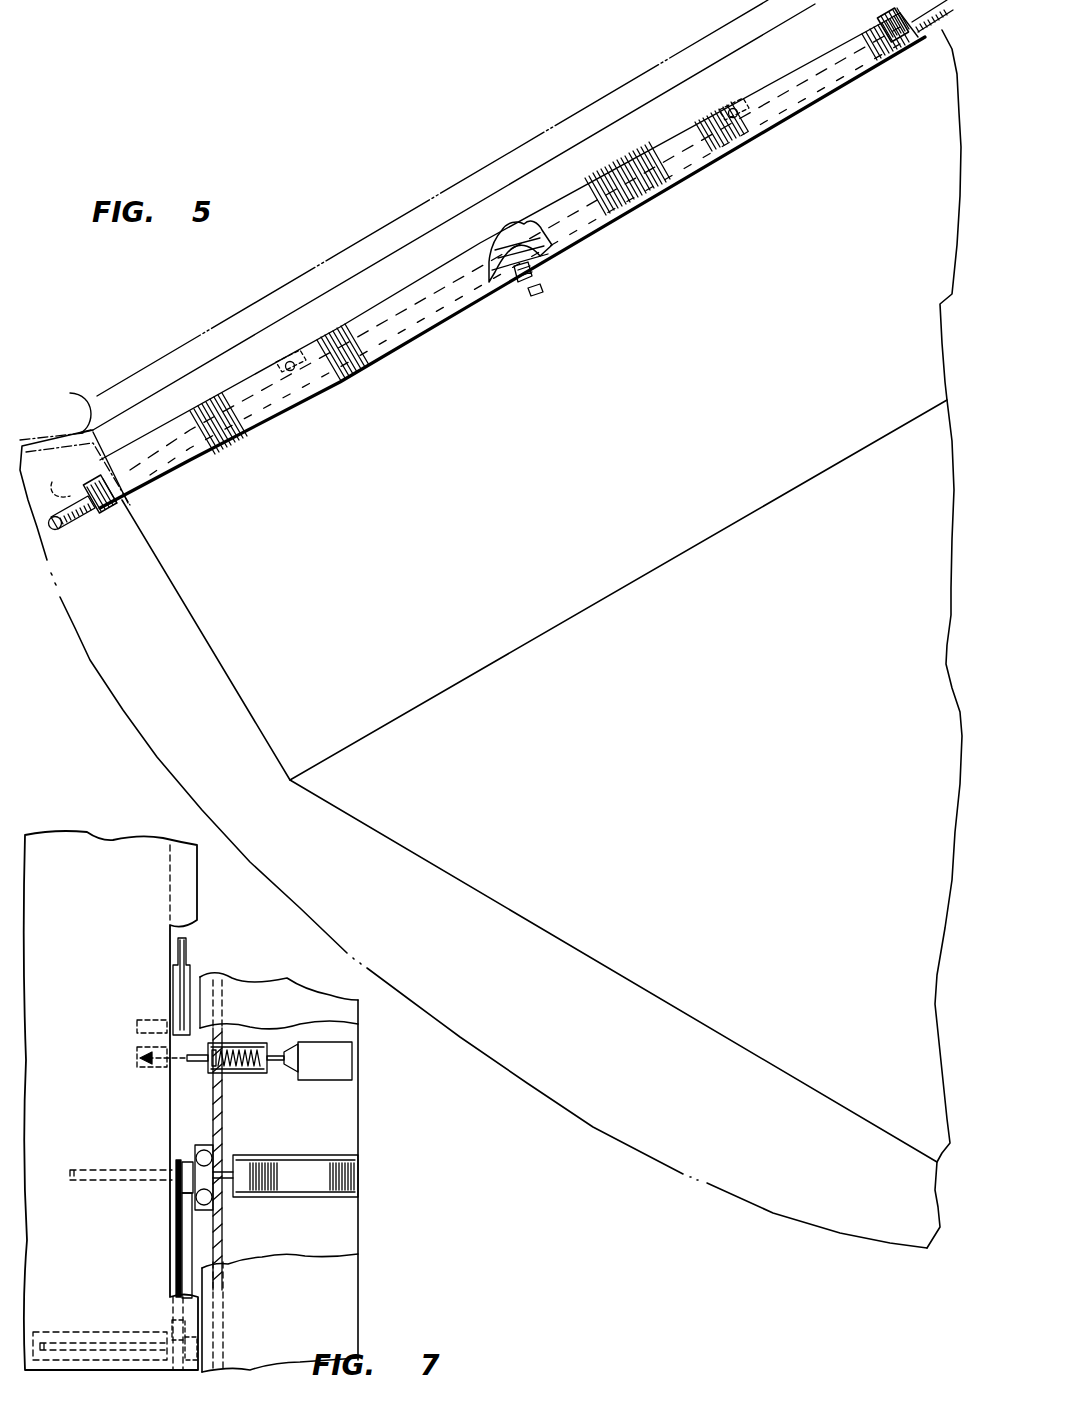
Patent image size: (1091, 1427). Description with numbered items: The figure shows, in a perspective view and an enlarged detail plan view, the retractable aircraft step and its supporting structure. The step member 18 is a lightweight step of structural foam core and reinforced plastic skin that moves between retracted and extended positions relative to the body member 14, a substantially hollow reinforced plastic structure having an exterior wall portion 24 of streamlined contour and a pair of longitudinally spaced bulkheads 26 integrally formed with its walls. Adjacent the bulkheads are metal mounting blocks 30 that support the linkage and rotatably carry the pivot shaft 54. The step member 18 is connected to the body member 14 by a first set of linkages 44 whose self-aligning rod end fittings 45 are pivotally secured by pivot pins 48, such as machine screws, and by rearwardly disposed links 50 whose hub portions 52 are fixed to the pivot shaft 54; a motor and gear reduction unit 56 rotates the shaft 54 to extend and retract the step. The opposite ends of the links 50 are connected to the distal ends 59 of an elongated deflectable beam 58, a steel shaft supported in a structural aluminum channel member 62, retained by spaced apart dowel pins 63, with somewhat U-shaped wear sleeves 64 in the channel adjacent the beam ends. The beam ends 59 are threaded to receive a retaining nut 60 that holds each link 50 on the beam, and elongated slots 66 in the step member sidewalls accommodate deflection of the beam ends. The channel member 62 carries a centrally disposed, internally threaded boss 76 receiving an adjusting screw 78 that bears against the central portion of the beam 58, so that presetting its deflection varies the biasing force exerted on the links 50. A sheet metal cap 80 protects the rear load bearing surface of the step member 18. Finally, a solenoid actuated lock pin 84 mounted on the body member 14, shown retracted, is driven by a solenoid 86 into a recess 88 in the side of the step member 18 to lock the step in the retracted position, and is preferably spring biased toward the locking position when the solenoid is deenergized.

In FIG. 7, the body member 14 is at (360, 1122).
In FIG. 5, the step member 18 is at (513, 912).
In FIG. 7, the step member 18 is at (198, 906).
In FIG. 7, the exterior wall portion 24 is at (345, 1306).
In FIG. 7, the bulkheads 26 is at (222, 1108).
In FIG. 7, the mounting blocks 30 is at (195, 1148).
In FIG. 7, the linkages 44 is at (190, 958).
In FIG. 7, the rod end fittings 45 is at (206, 984).
In FIG. 7, the pivot pin 48 is at (152, 1018).
In FIG. 7, the links 50 is at (176, 1254).
In FIG. 7, the hub portions 52 is at (186, 1195).
In FIG. 7, the pivot shaft 54 is at (92, 1182).
In FIG. 7, the motor and gear reduction unit 56 is at (350, 1180).
In FIG. 5, the deflectable beam 58 is at (492, 233).
In FIG. 7, the deflectable beam 58 is at (70, 1334).
In FIG. 5, the distal ends 59 is at (68, 531).
In FIG. 7, the distal ends 59 is at (225, 1340).
In FIG. 7, the retaining nut 60 is at (215, 1318).
In FIG. 5, the channel member 62 is at (201, 406).
In FIG. 7, the channel member 62 is at (118, 1334).
In FIG. 5, the dowel pins 63 is at (286, 364).
In FIG. 5, the wear sleeves 64 is at (94, 480).
In FIG. 5, the elongated slots 66 is at (54, 486).
In FIG. 5, the boss 76 is at (534, 270).
In FIG. 5, the adjusting screw 78 is at (544, 292).
In FIG. 5, the sheet metal cap 80 is at (72, 394).
In FIG. 7, the lock pin 84 is at (205, 1062).
In FIG. 7, the solenoid 86 is at (340, 1062).
In FIG. 7, the recess 88 is at (140, 1046).